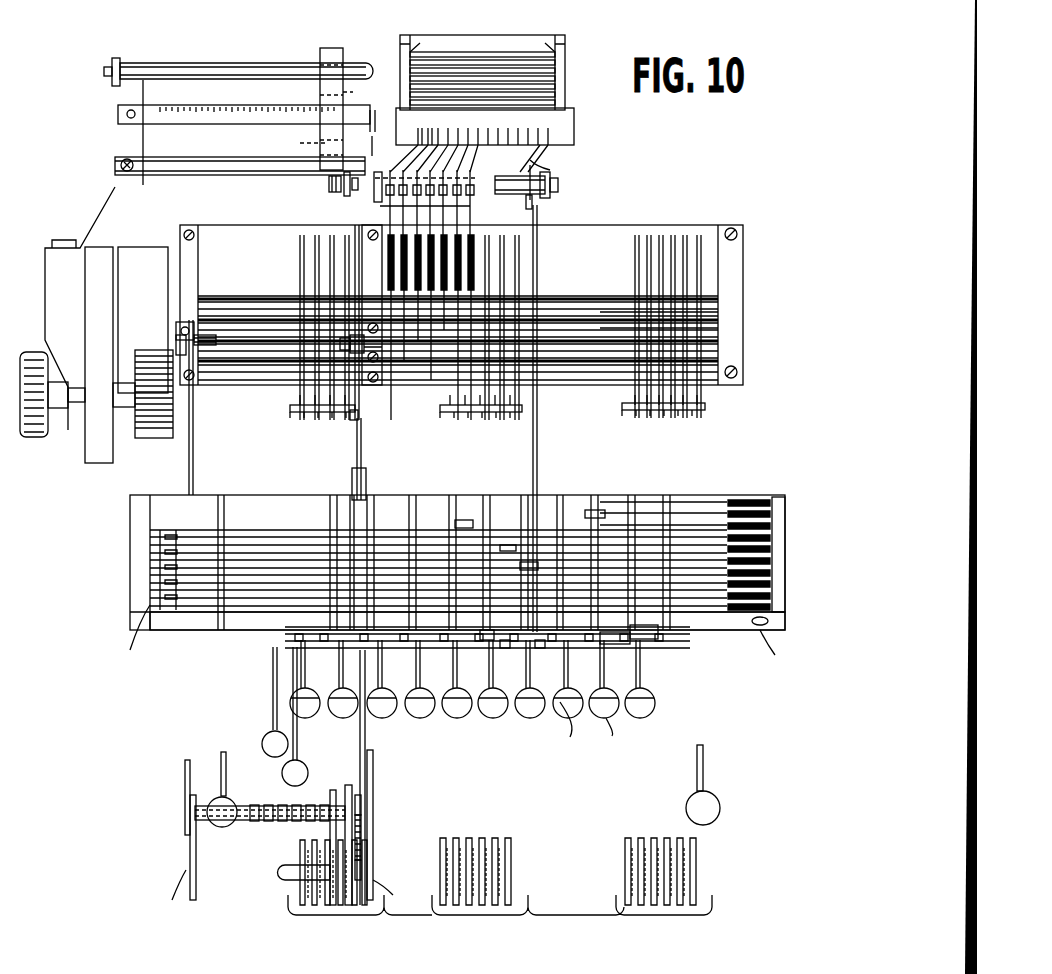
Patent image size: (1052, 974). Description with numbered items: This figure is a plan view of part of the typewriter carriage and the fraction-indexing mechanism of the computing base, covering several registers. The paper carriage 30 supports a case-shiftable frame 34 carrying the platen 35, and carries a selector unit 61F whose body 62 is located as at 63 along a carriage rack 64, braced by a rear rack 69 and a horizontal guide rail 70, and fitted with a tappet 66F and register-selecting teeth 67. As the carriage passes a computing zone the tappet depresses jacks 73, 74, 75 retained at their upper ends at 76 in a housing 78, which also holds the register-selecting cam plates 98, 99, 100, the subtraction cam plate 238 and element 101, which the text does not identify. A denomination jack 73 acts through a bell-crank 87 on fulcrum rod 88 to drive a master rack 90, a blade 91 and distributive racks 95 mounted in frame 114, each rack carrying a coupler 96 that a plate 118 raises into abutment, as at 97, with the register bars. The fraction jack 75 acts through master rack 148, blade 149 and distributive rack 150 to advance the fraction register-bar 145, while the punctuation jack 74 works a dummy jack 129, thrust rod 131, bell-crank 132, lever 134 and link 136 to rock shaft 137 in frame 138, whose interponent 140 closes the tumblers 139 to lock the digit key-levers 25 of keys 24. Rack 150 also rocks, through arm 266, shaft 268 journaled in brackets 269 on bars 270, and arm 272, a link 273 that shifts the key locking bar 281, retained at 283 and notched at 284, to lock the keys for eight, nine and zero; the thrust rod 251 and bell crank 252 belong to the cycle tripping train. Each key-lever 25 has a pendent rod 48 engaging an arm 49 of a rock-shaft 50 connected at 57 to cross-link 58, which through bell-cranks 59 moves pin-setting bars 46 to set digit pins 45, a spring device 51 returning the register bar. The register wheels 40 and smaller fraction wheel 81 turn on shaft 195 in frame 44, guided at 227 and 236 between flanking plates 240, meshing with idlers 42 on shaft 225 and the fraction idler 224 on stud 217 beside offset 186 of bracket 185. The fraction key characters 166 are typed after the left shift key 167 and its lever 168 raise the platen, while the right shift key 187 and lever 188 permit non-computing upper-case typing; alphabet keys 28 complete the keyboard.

The rear rack 69 is at (268, 62).
The selector unit 61F is at (333, 42).
The housing 78 is at (400, 52).
The type bar guide 101 is at (550, 27).
The horizontal guide rail 70 is at (488, 35).
The subtraction cam plate 238 is at (557, 62).
The register selecting cam plate 100 is at (557, 72).
The register selecting cam plate 99 is at (557, 86).
The register selecting cam plate 98 is at (557, 96).
The body 62 is at (320, 96).
The register-selecting teeth 67 is at (353, 92).
The thrust rod 251 is at (387, 120).
The tappet 66F is at (298, 144).
The bell crank 252 is at (372, 140).
The jack 75 is at (428, 132).
The punctuation-space jack 74 is at (480, 128).
The denomination jack 73 is at (485, 135).
The guide 76 is at (565, 135).
The dummy jack 129 is at (548, 150).
The thrust rod 131 is at (569, 172).
The bell-crank 87 is at (470, 178).
The bell-crank 132 is at (528, 180).
The master rack 148 is at (356, 184).
The fulcrum rod 88 is at (548, 185).
The lever 134 is at (535, 200).
The master racks 90 is at (472, 206).
The bars 270 is at (356, 217).
The carriage supported rack 64 is at (268, 180).
The body location 63 is at (330, 182).
The distributive rack 150 is at (356, 240).
The distributive racks 95 is at (672, 222).
The frame 114 is at (742, 403).
The blade 149 is at (725, 265).
The transverse blades 91 is at (720, 305).
The brackets 269 is at (393, 403).
The arm 272 is at (180, 330).
The transverse rock shaft 268 is at (210, 348).
The arm 266 is at (352, 350).
The link 273 is at (205, 475).
The plate 118 is at (706, 436).
The coupler 96 is at (664, 435).
The coupler abutment 97 is at (348, 418).
The fraction register-bar 145 is at (364, 470).
The link 136 is at (538, 460).
The case-shiftable frame 34 is at (105, 463).
The platen 35 is at (160, 438).
The paper carriage 30 is at (74, 462).
The cross-link 58 is at (237, 650).
The digit pins 45 is at (350, 522).
The rock-shaft connection 57 is at (600, 475).
The rock-shaft 50 is at (640, 510).
The frame 138 is at (728, 486).
The spring device 51 is at (780, 495).
The pin-setting bars 46 is at (135, 636).
The bell-cranks 59 is at (200, 600).
The pendent rod 48 is at (330, 650).
The rock-shaft 137 is at (487, 640).
The interponent 140 is at (505, 648).
The tumblers 139 is at (540, 648).
The arm 49 is at (630, 644).
The clearance notches 284 is at (648, 635).
The key locking bar 281 is at (725, 625).
The slide retainer 283 is at (781, 648).
The key lever 168 is at (222, 770).
The alphabet keys 28 is at (262, 750).
The offset 186 is at (353, 784).
The flanking plates 240 is at (398, 753).
The idlers 42 is at (340, 800).
The bracket 185 is at (375, 790).
The guide 236 is at (378, 803).
The stud 217 is at (372, 820).
The fraction idler 224 is at (368, 835).
The idler shaft 225 is at (265, 808).
The left-hand shift key 167 is at (225, 828).
The frame 44 is at (282, 894).
The guide 227 is at (197, 830).
The shaft 195 is at (285, 880).
The computing wheels 40 is at (635, 930).
The fraction computing wheel 81 is at (362, 905).
The key characters 166 is at (515, 732).
The key-levers 25 is at (577, 727).
The keys 24 is at (620, 735).
The key lever 188 is at (703, 775).
The right hand shift key 187 is at (720, 808).